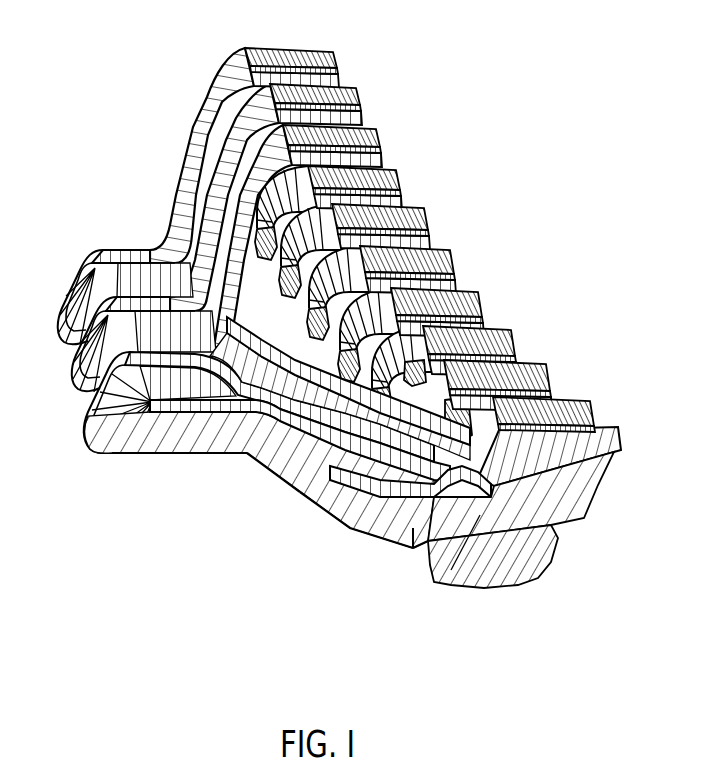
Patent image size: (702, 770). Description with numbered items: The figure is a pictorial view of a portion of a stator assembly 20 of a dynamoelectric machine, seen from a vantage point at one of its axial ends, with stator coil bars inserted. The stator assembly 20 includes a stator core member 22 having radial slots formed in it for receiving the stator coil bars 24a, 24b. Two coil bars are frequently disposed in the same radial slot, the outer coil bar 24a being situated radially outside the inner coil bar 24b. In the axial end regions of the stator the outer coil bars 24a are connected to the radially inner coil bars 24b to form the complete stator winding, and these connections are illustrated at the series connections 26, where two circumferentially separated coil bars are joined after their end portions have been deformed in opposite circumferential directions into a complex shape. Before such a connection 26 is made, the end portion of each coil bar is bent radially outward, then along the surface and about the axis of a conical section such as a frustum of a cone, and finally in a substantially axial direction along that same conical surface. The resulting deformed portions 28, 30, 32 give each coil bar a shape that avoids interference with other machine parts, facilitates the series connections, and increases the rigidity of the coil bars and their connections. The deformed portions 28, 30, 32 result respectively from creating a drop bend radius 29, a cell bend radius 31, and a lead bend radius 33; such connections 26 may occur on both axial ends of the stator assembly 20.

The stator assembly 20 is at (186, 98).
The stator core member 22 is at (289, 52).
The outer coil bar 24a is at (290, 232).
The inner coil bar 24b is at (372, 163).
The series connection 26 is at (72, 302).
The deformed portion (radially outward bend) 28 is at (413, 530).
The drop bend radius 29 is at (480, 515).
The deformed portion (conical bend) 30 is at (268, 457).
The cell bend radius 31 is at (426, 535).
The deformed portion (axial bend) 32 is at (174, 443).
The lead bend radius 33 is at (250, 448).